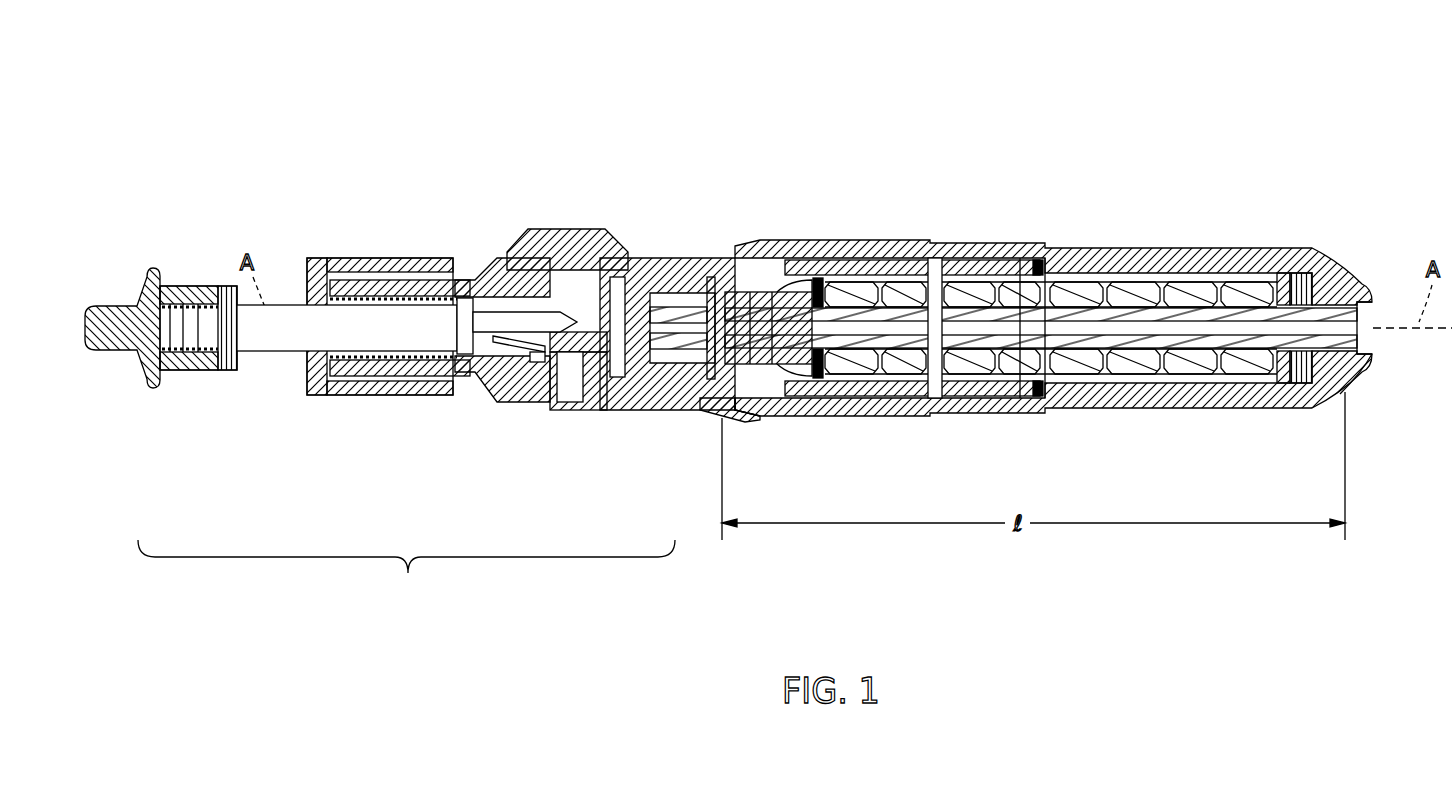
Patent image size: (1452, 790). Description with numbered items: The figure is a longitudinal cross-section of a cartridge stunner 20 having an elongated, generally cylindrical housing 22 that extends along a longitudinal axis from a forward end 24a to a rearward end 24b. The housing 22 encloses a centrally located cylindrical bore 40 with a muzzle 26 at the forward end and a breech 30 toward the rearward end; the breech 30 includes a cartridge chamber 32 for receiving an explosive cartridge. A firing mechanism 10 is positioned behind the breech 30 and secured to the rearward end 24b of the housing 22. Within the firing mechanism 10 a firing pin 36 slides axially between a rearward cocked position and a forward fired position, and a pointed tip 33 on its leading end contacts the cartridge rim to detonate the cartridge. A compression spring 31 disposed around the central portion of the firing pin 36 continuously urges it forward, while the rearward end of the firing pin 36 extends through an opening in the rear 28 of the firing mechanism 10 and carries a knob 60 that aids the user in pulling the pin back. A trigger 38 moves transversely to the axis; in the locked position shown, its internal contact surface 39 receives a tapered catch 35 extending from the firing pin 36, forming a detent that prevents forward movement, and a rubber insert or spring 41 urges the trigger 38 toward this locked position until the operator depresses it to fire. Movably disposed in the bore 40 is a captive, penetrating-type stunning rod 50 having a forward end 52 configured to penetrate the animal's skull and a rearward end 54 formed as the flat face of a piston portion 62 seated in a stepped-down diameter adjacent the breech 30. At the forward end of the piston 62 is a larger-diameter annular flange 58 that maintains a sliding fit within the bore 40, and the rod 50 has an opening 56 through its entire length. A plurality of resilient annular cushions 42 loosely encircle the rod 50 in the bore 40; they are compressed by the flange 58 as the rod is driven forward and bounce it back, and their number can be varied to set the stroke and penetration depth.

The firing mechanism 10 is at (406, 577).
The cartridge stunner 20 is at (806, 108).
The housing 22 is at (1156, 250).
The forward end 24a is at (1373, 295).
The rearward end 24b is at (734, 420).
The muzzle 26 is at (1373, 342).
The rear of firing mechanism 28 is at (388, 380).
The breech 30 is at (660, 260).
The compression spring 31 is at (444, 278).
The cartridge chamber 32 is at (716, 405).
The pointed tip 33 is at (574, 318).
The tapered catch 35 is at (540, 352).
The firing pin 36 is at (513, 322).
The trigger 38 is at (533, 254).
The contact surface 39 is at (537, 362).
The bore 40 is at (1097, 376).
The rubber insert or spring 41 is at (570, 395).
The resilient annular cushions 42 is at (840, 284).
The stunning rod 50 is at (1027, 290).
The forward end of stunning rod 52 is at (1347, 305).
The rearward end of stunning rod 54 is at (712, 278).
The opening 56 is at (1082, 325).
The annular flange 58 is at (812, 382).
The knob 60 is at (150, 306).
The piston portion 62 is at (760, 300).